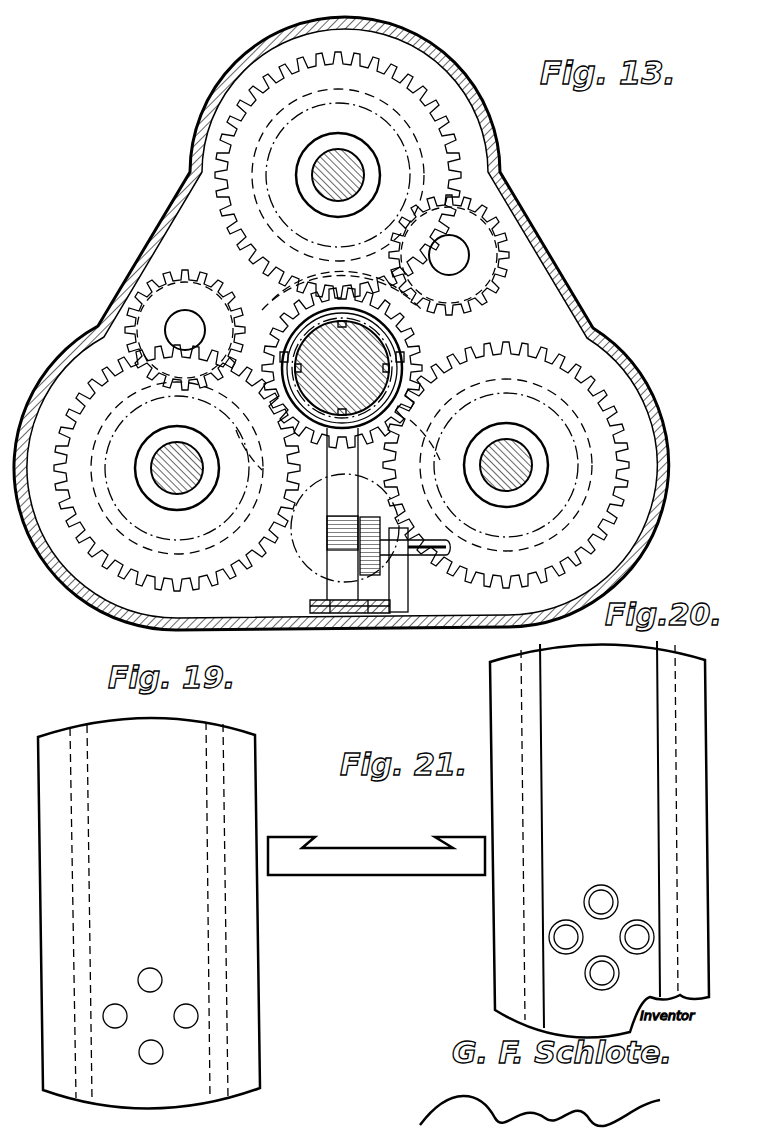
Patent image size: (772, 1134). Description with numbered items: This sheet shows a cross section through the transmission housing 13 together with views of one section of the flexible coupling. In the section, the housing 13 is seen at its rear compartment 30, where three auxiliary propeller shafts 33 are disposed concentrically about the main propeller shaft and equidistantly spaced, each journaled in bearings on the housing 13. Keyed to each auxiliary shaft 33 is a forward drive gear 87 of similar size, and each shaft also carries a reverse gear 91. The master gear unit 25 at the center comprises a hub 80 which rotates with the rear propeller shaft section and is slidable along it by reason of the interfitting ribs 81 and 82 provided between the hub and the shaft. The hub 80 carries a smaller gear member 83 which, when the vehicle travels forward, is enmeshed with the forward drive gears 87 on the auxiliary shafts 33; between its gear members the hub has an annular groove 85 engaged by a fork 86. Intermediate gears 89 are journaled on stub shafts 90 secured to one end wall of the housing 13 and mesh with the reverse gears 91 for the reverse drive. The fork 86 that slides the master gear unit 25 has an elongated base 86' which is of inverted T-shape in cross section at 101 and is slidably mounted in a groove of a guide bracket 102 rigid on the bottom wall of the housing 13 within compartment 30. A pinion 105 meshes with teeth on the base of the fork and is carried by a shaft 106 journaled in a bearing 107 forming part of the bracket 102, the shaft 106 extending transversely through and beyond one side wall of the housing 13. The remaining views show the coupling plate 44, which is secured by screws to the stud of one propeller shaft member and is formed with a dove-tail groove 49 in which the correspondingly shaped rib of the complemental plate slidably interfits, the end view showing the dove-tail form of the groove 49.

In FIG. 13, the housing 13 is at (127, 290).
In FIG. 13, the rear compartment 30 is at (529, 277).
In FIG. 13, the forward drive gears 87 is at (383, 114).
In FIG. 13, the reverse gears 91 is at (330, 100).
In FIG. 13, the auxiliary propeller shafts 33 is at (362, 172).
In FIG. 13, the intermediate gears 89 is at (190, 270).
In FIG. 13, the stub shaft 90 is at (186, 312).
In FIG. 13, the hub 80 is at (349, 305).
In FIG. 13, the annular groove 85 is at (392, 338).
In FIG. 13, the fork 86 is at (380, 456).
In FIG. 13, the interfitting rib 82 is at (340, 322).
In FIG. 13, the smaller gear member 83 is at (368, 440).
In FIG. 13, the interfitting rib 81 is at (290, 335).
In FIG. 13, the master gear unit 25 is at (417, 343).
In FIG. 13, the pinion 105 is at (378, 523).
In FIG. 13, the bearing 107 is at (413, 528).
In FIG. 13, the shaft 106 is at (447, 550).
In FIG. 13, the elongated base 86' is at (328, 596).
In FIG. 13, the inverted T-shape cross section 101 is at (352, 628).
In FIG. 13, the guide bracket 102 is at (376, 628).
In FIG. 19, the plate 44 is at (149, 913).
In FIG. 20, the plate 44 is at (500, 707).
In FIG. 19, the groove 49 is at (217, 783).
In FIG. 20, the groove 49 is at (543, 800).
In FIG. 21, the groove 49 is at (326, 838).